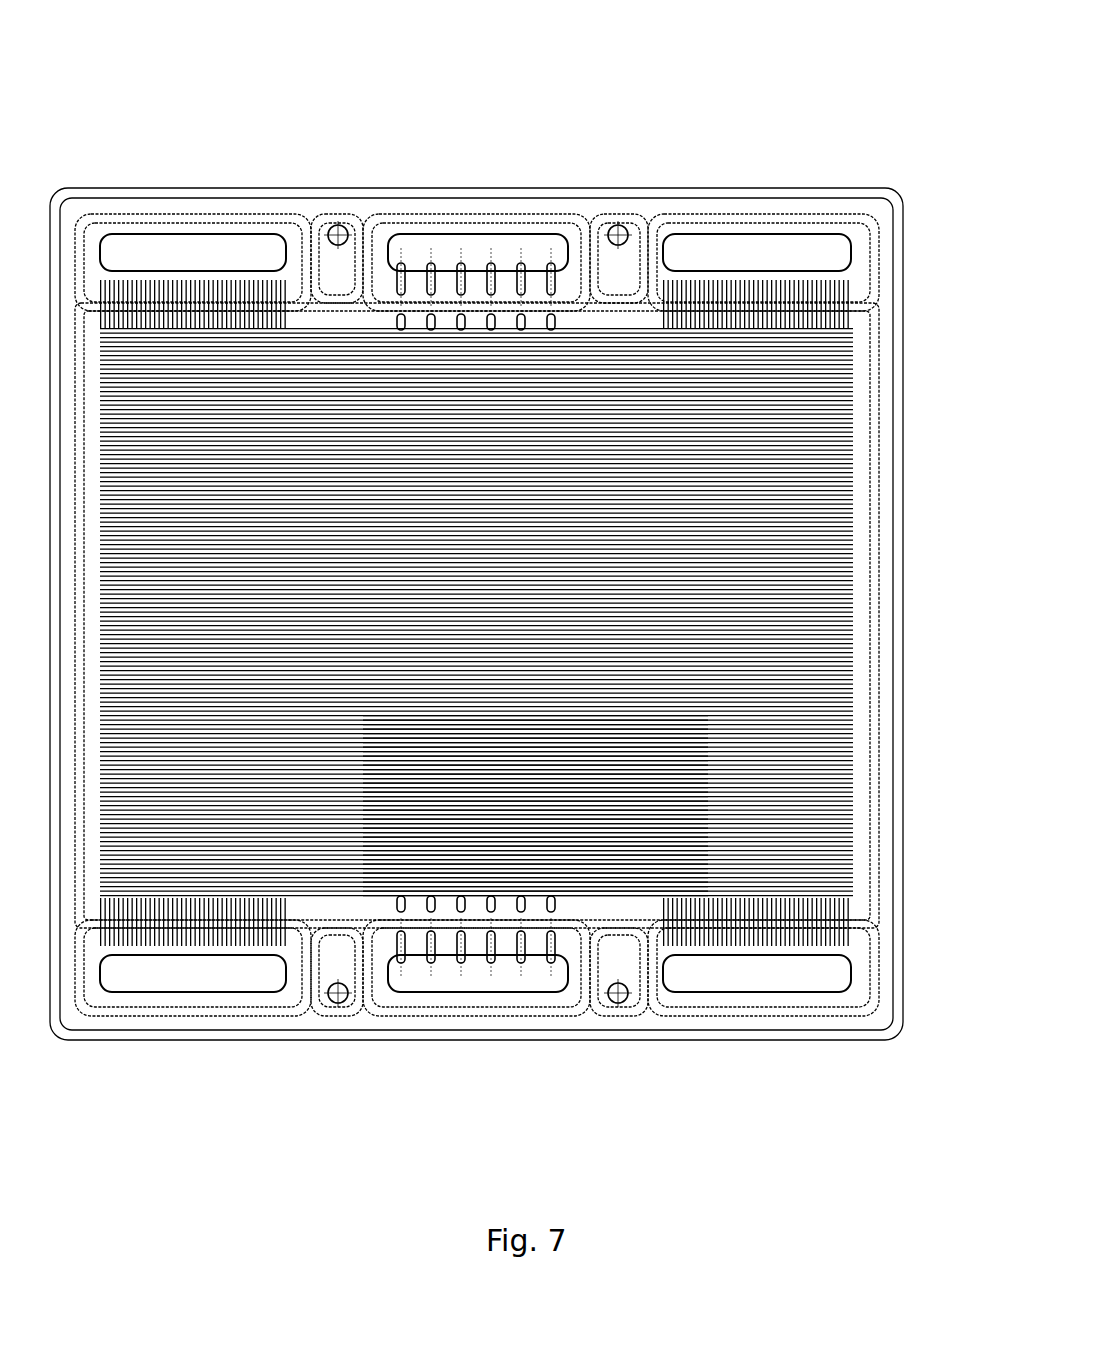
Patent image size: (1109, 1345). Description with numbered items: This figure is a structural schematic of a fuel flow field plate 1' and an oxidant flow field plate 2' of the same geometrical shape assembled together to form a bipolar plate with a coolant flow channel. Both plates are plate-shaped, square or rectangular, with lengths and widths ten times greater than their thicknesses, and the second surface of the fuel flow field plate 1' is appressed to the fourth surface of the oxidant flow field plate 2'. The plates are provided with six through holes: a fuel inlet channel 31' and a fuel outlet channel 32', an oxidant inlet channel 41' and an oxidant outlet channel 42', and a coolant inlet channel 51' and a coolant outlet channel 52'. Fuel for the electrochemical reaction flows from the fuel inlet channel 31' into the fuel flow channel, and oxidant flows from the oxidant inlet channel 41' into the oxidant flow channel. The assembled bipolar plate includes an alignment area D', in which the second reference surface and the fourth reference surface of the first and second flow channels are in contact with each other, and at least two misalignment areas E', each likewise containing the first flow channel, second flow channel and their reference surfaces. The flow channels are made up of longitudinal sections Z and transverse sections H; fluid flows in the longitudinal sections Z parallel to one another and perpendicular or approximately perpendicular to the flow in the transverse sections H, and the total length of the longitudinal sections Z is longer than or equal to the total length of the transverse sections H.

The fuel flow field plate 1' is at (476, 538).
The oxidant flow field plate 2' is at (476, 533).
The fuel inlet channel 31' is at (193, 170).
The fuel outlet channel 32' is at (757, 1042).
The oxidant inlet channel 41' is at (757, 156).
The oxidant outlet channel 42' is at (193, 1024).
The coolant inlet channel 51' is at (499, 1011).
The coolant outlet channel 52' is at (496, 182).
The alignment area D' is at (728, 613).
The misalignment area E' is at (404, 913).
The longitudinal sections Z is at (638, 858).
The transverse sections H is at (782, 878).